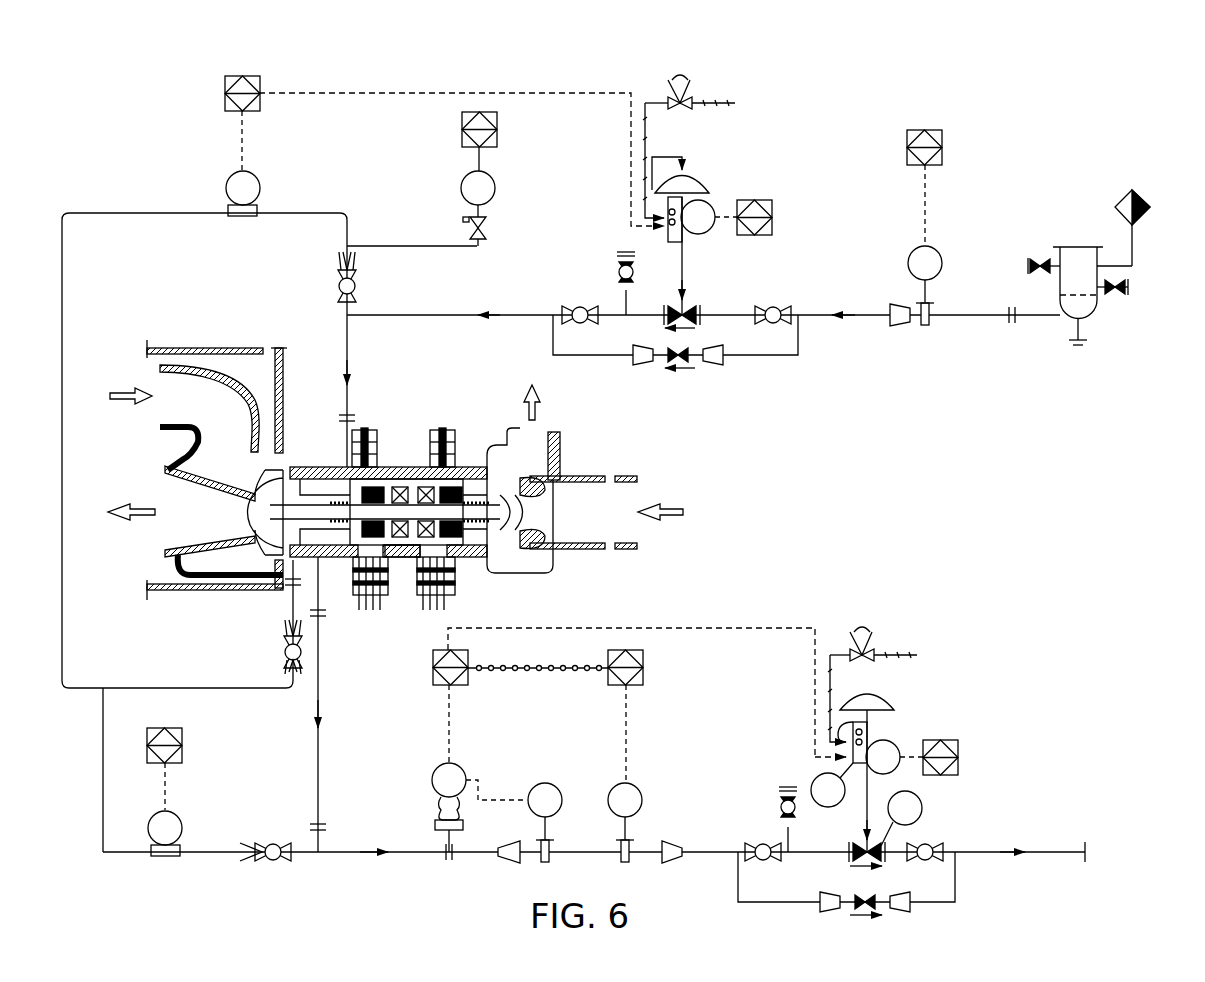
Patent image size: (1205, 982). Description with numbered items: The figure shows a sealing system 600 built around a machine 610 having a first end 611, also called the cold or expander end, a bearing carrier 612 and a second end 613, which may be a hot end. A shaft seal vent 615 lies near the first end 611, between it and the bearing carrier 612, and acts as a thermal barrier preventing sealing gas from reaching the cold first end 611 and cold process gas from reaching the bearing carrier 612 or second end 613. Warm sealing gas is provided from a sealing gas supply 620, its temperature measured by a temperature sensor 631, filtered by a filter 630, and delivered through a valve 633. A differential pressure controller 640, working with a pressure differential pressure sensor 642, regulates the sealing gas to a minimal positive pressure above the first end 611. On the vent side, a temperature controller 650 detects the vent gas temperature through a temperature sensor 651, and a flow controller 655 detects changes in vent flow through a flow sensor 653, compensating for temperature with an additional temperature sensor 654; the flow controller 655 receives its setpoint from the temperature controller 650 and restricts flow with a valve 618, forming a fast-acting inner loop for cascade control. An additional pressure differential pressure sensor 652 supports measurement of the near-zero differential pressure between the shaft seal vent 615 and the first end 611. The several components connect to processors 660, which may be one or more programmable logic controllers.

The sealing system 600 is at (895, 41).
The machine 610 is at (395, 452).
The first end 611 is at (225, 470).
The bearing carrier 612 is at (390, 544).
The second end 613 is at (585, 479).
The shaft seal vent 615 is at (348, 704).
The valve 618 is at (905, 746).
The sealing gas supply 620 is at (1147, 183).
The filter 630 is at (1082, 325).
The temperature sensor 631 is at (961, 246).
The valve 633 is at (718, 233).
The differential pressure controller 640 is at (190, 103).
The pressure differential pressure sensor 642 is at (190, 184).
The temperature controller 650 is at (662, 630).
The temperature sensor 651 is at (667, 791).
The pressure differential pressure sensor 652 is at (217, 815).
The flow sensor 653 is at (486, 775).
The temperature sensor 654 is at (566, 780).
The flow controller 655 is at (487, 630).
The processor 660 is at (597, 415).